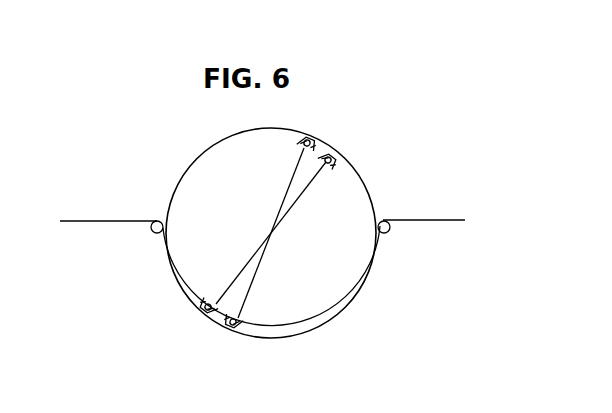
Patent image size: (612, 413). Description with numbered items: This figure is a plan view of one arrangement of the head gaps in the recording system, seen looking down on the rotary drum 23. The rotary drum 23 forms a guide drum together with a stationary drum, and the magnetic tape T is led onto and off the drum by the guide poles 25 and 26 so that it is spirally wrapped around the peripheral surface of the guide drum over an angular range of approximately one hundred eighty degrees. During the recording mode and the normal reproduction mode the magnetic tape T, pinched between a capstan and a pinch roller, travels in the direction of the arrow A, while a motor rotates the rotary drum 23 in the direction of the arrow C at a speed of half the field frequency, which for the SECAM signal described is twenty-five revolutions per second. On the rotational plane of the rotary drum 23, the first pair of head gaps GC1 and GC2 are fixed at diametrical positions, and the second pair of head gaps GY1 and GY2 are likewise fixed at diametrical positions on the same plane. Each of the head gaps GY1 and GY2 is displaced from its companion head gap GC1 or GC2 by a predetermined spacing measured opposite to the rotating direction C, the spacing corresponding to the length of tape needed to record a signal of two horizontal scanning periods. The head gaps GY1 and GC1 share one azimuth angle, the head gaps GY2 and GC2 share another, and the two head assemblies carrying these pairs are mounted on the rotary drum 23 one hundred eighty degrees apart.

The rotary drum 23 is at (366, 201).
The guide pole 25 is at (155, 235).
The guide pole 26 is at (388, 234).
The magnetic tape T is at (113, 221).
The rotating direction of the rotary drum C is at (225, 124).
The tape travel direction A is at (408, 234).
The head gap GC1 is at (240, 340).
The head gap GC2 is at (321, 136).
The head gap GY1 is at (196, 306).
The head gap GY2 is at (345, 161).